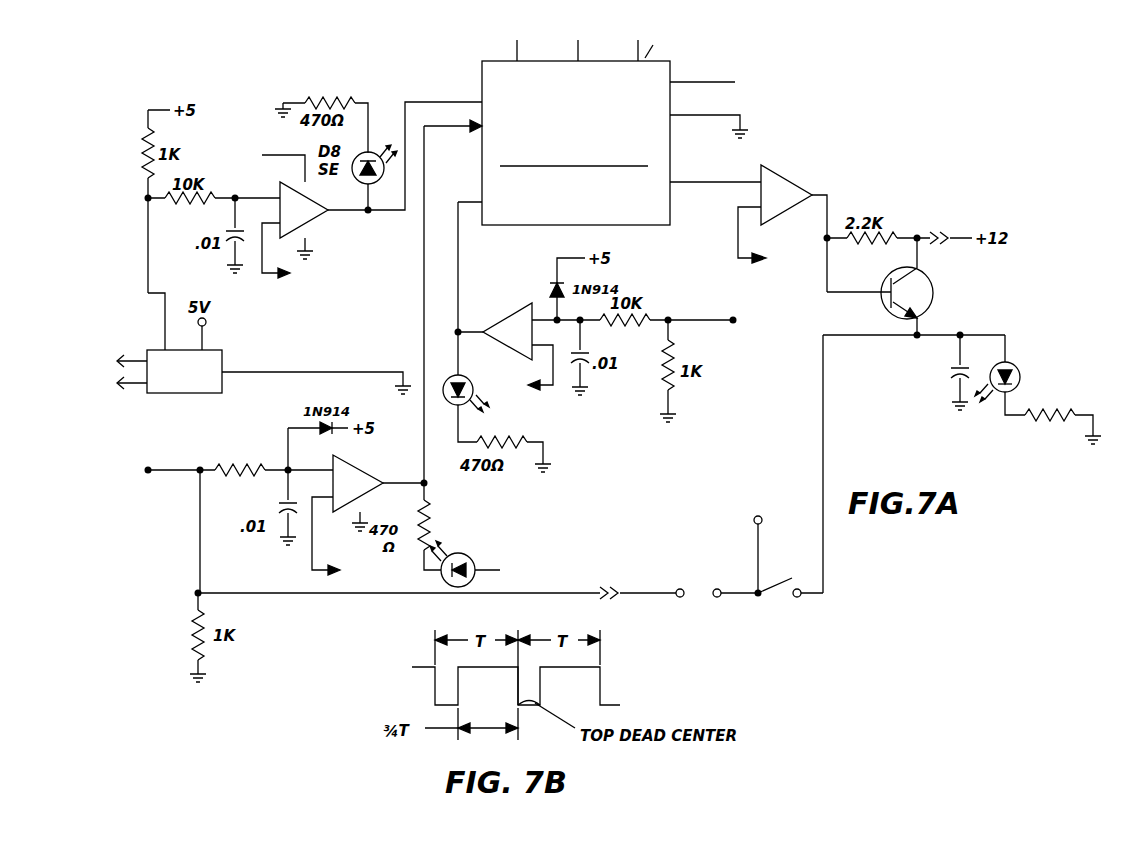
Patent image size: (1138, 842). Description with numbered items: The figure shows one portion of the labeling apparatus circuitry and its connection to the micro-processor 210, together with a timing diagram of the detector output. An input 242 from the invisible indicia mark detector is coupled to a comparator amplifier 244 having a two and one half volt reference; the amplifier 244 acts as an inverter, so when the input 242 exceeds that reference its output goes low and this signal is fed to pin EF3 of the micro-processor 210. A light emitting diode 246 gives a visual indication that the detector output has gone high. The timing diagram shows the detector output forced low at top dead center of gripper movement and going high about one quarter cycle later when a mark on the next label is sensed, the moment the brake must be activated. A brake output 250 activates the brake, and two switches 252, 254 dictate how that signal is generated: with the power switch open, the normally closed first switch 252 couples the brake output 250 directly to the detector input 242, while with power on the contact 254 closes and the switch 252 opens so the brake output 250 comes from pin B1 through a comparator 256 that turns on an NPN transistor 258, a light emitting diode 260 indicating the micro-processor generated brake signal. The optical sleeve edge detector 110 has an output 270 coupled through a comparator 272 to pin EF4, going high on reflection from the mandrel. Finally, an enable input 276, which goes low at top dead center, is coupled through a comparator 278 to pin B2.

The optical sleeve edge detector 110 is at (225, 360).
The micro-processor 210 is at (608, 212).
The input 242 is at (153, 471).
The comparator amplifier 244 is at (358, 478).
The light emitting diode 246 is at (466, 557).
The brake output 250 is at (755, 552).
The first switch 252 is at (698, 597).
The second switch 254 is at (780, 590).
The comparator 256 is at (783, 175).
The NPN transistor 258 is at (922, 308).
The light emitting diode 260 is at (996, 392).
The output 270 is at (165, 311).
The comparator 272 is at (312, 226).
The enable input 276 is at (692, 318).
The comparator 278 is at (520, 315).